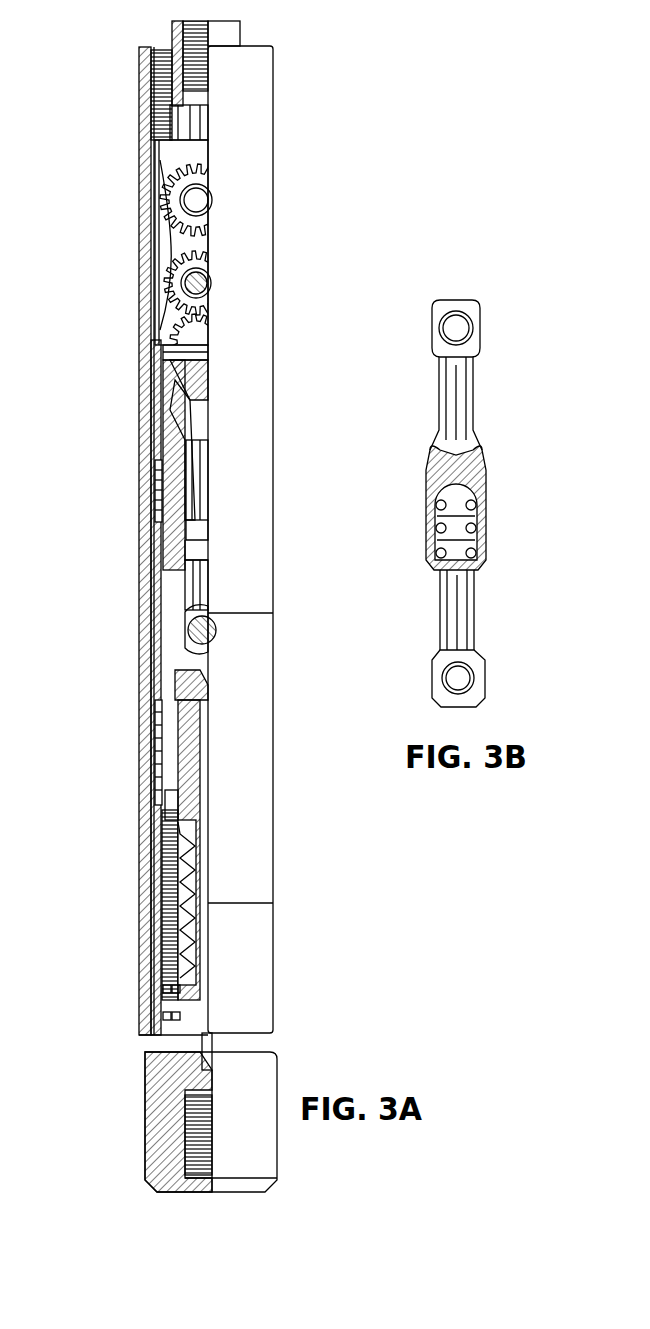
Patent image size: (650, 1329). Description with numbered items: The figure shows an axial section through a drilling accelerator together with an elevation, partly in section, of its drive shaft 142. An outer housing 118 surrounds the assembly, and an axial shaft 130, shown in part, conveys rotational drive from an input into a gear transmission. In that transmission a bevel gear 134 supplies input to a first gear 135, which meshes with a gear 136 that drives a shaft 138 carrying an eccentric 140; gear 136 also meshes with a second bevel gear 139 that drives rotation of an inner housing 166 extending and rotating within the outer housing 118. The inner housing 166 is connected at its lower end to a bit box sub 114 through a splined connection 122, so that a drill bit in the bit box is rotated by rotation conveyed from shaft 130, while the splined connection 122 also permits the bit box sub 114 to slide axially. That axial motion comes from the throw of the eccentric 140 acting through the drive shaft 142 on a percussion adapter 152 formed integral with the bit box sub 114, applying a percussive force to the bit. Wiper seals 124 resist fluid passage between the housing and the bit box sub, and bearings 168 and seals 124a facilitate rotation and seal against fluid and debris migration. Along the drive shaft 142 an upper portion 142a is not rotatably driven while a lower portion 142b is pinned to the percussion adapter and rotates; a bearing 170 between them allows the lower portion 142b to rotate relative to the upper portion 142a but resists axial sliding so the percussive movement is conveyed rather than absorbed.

In FIG. 3A, the bit box sub 114 is at (150, 1085).
In FIG. 3A, the outer housing 118 is at (262, 131).
In FIG. 3A, the splined connection 122 is at (158, 920).
In FIG. 3A, the wiper seals 124 is at (158, 1000).
In FIG. 3A, the seals 124a is at (160, 988).
In FIG. 3A, the axial shaft 130 is at (232, 35).
In FIG. 3A, the bevel gear 134 is at (168, 155).
In FIG. 3A, the first gear 135 is at (180, 192).
In FIG. 3A, the gear 136 is at (165, 245).
In FIG. 3A, the shaft 138 is at (175, 282).
In FIG. 3A, the second bevel gear 139 is at (142, 330).
In FIG. 3A, the eccentric 140 is at (182, 298).
In FIG. 3A, the drive shaft 142 is at (183, 423).
In FIG. 3B, the drive shaft 142 is at (510, 503).
In FIG. 3B, the upper portion 142a is at (457, 398).
In FIG. 3B, the lower portion 142b is at (460, 606).
In FIG. 3A, the percussion adapter 152 is at (193, 893).
In FIG. 3A, the inner housing 166 is at (160, 456).
In FIG. 3A, the bearings 168 is at (158, 490).
In FIG. 3B, the bearing 170 is at (470, 520).